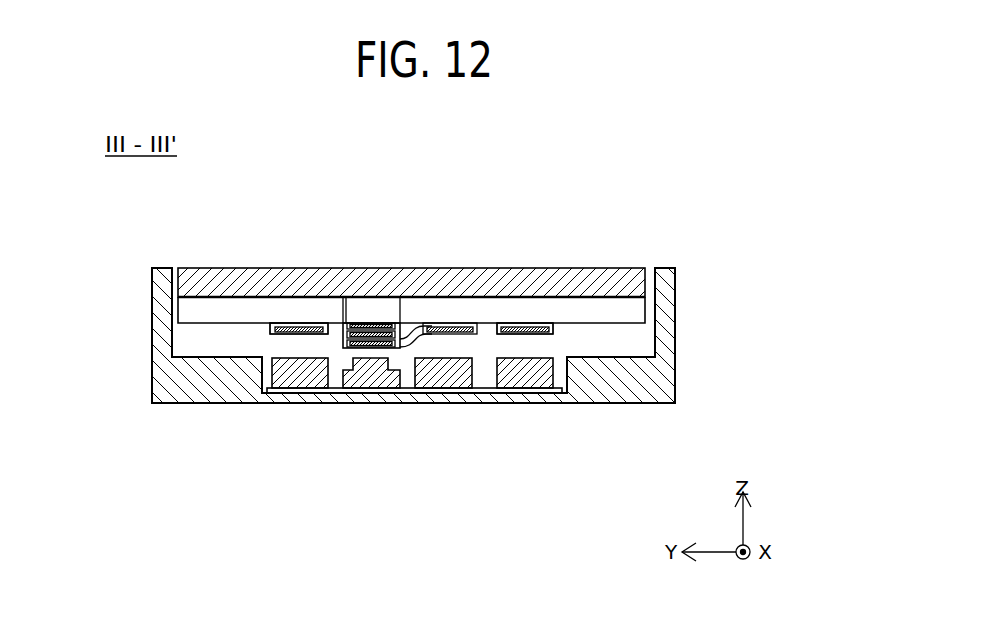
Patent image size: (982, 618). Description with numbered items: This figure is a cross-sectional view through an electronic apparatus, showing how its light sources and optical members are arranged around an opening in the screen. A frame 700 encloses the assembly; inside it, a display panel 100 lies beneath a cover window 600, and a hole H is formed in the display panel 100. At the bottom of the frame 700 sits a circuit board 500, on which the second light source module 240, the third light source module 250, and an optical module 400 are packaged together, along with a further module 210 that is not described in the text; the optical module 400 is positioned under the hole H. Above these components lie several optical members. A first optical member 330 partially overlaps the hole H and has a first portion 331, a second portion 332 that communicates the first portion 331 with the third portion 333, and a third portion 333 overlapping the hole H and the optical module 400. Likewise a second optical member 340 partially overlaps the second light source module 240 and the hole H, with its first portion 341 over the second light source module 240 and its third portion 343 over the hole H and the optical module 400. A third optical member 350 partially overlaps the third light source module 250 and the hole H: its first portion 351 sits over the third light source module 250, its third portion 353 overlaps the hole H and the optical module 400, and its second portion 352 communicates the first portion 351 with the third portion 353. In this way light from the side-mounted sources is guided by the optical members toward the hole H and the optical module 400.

The frame 700 is at (656, 376).
The cover window 600 is at (630, 278).
The display panel 100 is at (585, 308).
The hole H is at (364, 307).
The first optical member 330 is at (270, 330).
The first portion 331 is at (300, 330).
The second portion 332 is at (322, 328).
The third portion 333 is at (353, 325).
The third portion 353 is at (372, 338).
The third portion 343 is at (340, 345).
The second optical member 340 is at (360, 342).
The second portion 352 is at (412, 328).
The first portion 351 is at (443, 332).
The third optical member 350 is at (482, 332).
The first portion 341 is at (517, 332).
The circuit board 500 is at (560, 392).
The first support block 210 is at (280, 375).
The optical module 400 is at (383, 365).
The third light source module 250 is at (458, 376).
The second light source module 240 is at (512, 376).